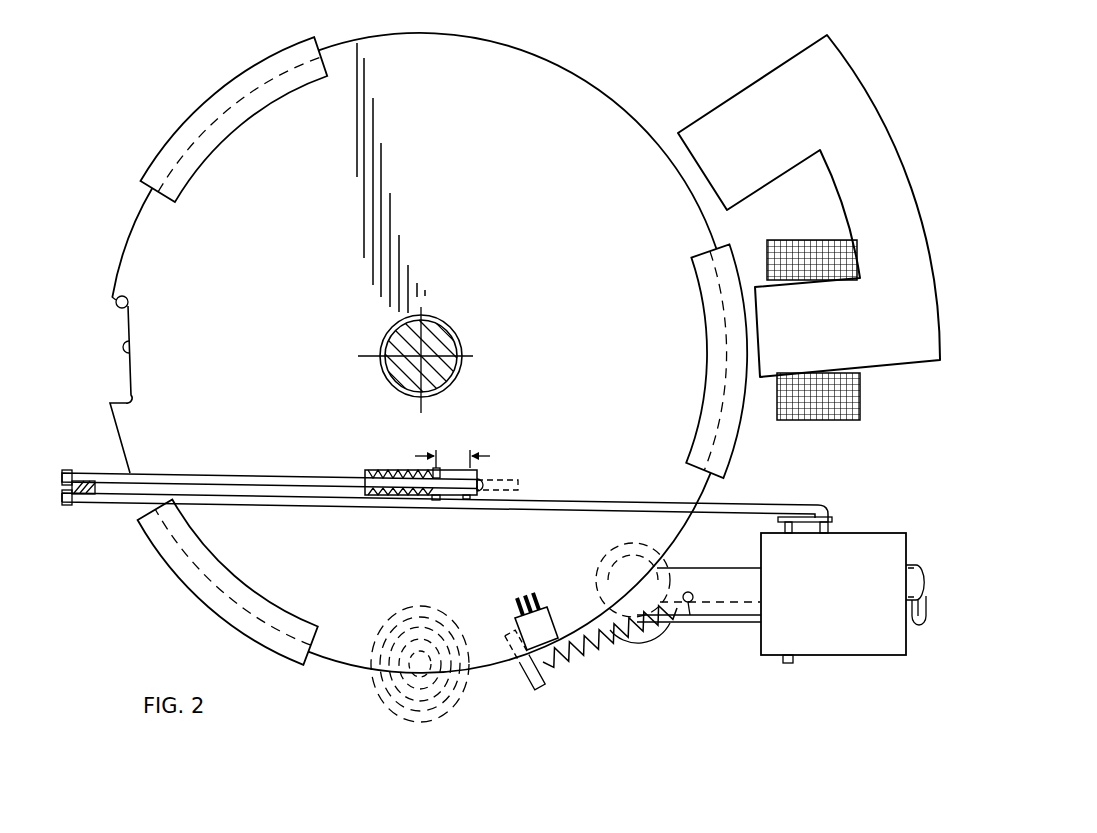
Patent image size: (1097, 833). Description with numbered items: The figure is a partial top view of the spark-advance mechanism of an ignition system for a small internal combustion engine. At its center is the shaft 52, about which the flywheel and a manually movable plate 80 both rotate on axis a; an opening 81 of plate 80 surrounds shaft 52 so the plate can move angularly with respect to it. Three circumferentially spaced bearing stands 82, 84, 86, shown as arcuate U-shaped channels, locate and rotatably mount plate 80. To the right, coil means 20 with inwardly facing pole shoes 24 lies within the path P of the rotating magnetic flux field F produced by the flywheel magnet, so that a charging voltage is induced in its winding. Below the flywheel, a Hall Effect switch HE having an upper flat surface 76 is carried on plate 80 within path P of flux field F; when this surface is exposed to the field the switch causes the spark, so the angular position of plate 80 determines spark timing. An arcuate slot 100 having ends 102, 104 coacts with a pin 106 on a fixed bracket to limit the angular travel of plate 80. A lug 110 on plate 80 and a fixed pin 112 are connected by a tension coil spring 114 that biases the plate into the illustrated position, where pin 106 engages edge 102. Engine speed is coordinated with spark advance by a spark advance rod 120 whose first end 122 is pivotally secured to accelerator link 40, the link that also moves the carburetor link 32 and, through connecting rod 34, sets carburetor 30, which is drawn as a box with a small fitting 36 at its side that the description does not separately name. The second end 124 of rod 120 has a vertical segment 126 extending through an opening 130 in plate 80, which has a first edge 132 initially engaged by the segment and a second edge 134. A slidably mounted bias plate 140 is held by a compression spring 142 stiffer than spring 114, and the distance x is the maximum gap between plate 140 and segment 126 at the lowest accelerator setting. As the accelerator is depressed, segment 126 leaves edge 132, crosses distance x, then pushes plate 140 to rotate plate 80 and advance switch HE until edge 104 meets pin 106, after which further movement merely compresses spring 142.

The manually movable plate 80 is at (580, 82).
The bearing stand 86 is at (230, 130).
The bearing stand 84 is at (713, 393).
The bearing stand 82 is at (292, 625).
The opening 81 is at (433, 320).
The shaft 52 is at (443, 338).
The axis a is at (392, 340).
The slot end 102 is at (128, 298).
The pin 106 is at (117, 307).
The slot 100 is at (133, 347).
The slot end 104 is at (132, 399).
The spark advance rod 120 is at (307, 476).
The connecting rod 34 is at (580, 502).
The first end 122 is at (66, 504).
The accelerator link 40 is at (88, 497).
The second edge 134 is at (373, 470).
The vertical segment 126 is at (476, 476).
The second end 124 is at (505, 481).
The distance x is at (452, 456).
The compression spring 142 is at (397, 495).
The bias plate 140 is at (435, 498).
The opening 130 is at (465, 498).
The first edge 132 is at (478, 498).
The coil means 20 is at (905, 378).
The pole shoes 24 is at (700, 165).
The manually movable link 32 is at (830, 516).
The carburetor 30 is at (857, 655).
The roller 36 is at (912, 630).
The fixed pin 112 is at (690, 605).
The tension coil spring 114 is at (617, 645).
The upper flat surface 76 is at (552, 633).
The Hall Effect switch HE is at (548, 612).
The lug 110 is at (537, 690).
The path P is at (416, 600).
The flux field F is at (462, 700).